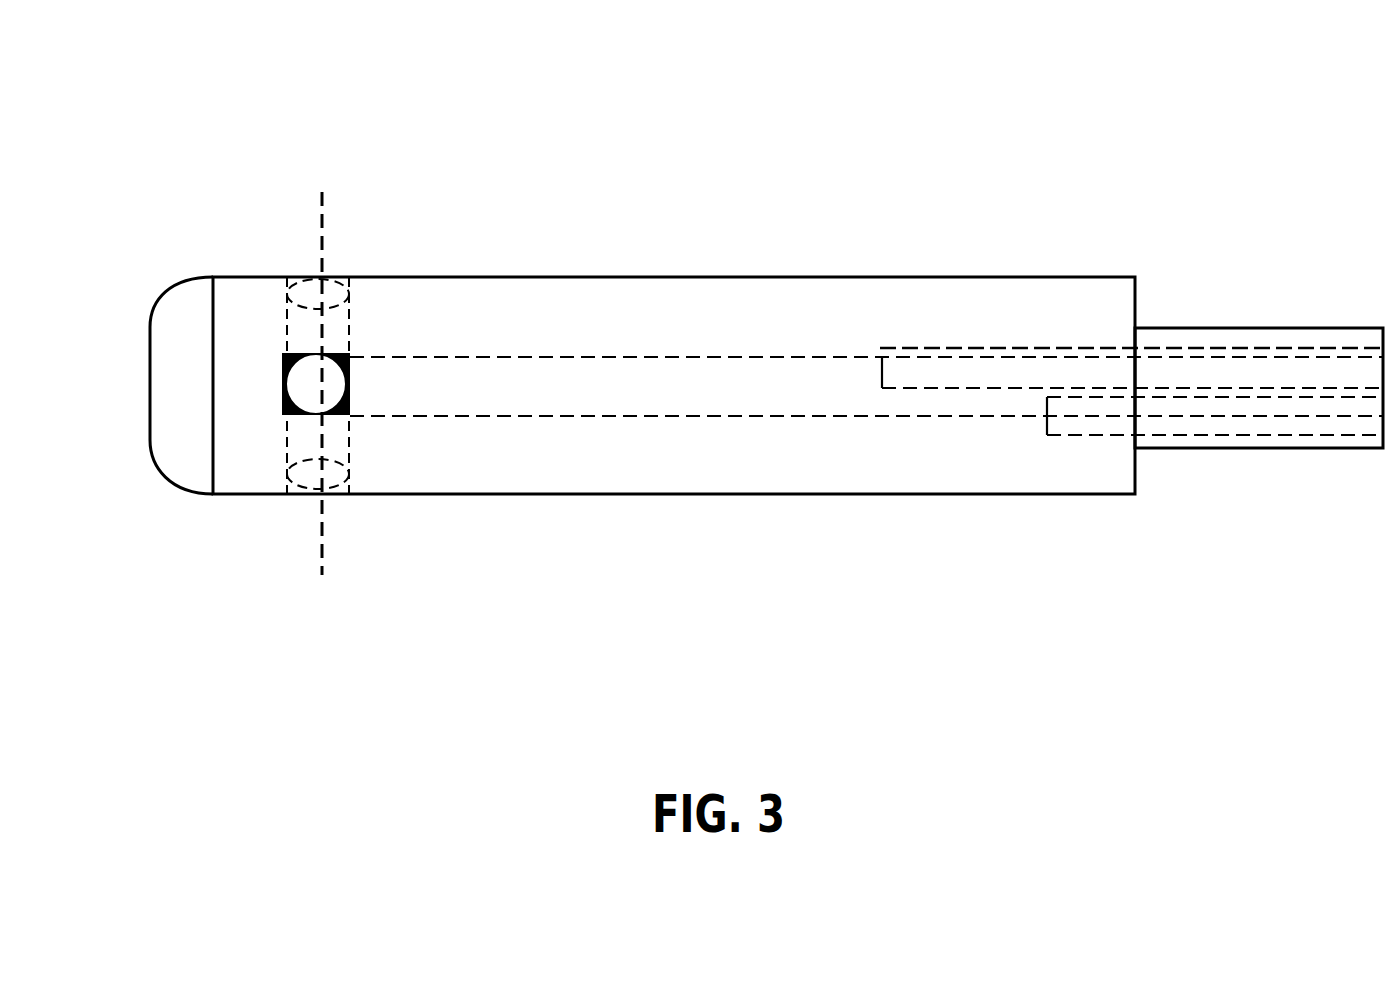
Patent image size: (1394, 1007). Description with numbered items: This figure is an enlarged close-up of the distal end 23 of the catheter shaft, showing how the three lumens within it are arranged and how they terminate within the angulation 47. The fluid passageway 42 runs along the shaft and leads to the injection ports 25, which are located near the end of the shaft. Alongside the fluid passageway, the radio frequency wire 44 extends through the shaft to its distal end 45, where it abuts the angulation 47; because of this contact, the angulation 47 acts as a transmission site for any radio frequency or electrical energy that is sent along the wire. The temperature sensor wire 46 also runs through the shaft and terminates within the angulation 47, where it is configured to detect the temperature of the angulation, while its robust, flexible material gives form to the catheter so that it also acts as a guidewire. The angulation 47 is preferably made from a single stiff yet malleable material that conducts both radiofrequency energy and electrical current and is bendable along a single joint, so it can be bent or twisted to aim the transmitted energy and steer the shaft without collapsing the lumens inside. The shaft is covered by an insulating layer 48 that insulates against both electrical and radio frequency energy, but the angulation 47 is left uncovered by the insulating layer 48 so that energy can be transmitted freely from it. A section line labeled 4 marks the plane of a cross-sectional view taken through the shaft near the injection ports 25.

The distal end 23 is at (147, 205).
The injection ports 25 is at (302, 277).
The fluid passageway 42 is at (683, 357).
The radio frequency wire 44 is at (1057, 348).
The distal end of radio frequency wire 45 is at (882, 362).
The temperature sensor wire 46 is at (1222, 437).
The angulation 47 is at (836, 495).
The insulating layer 48 is at (1210, 330).
The section line 4- 4 is at (322, 192).